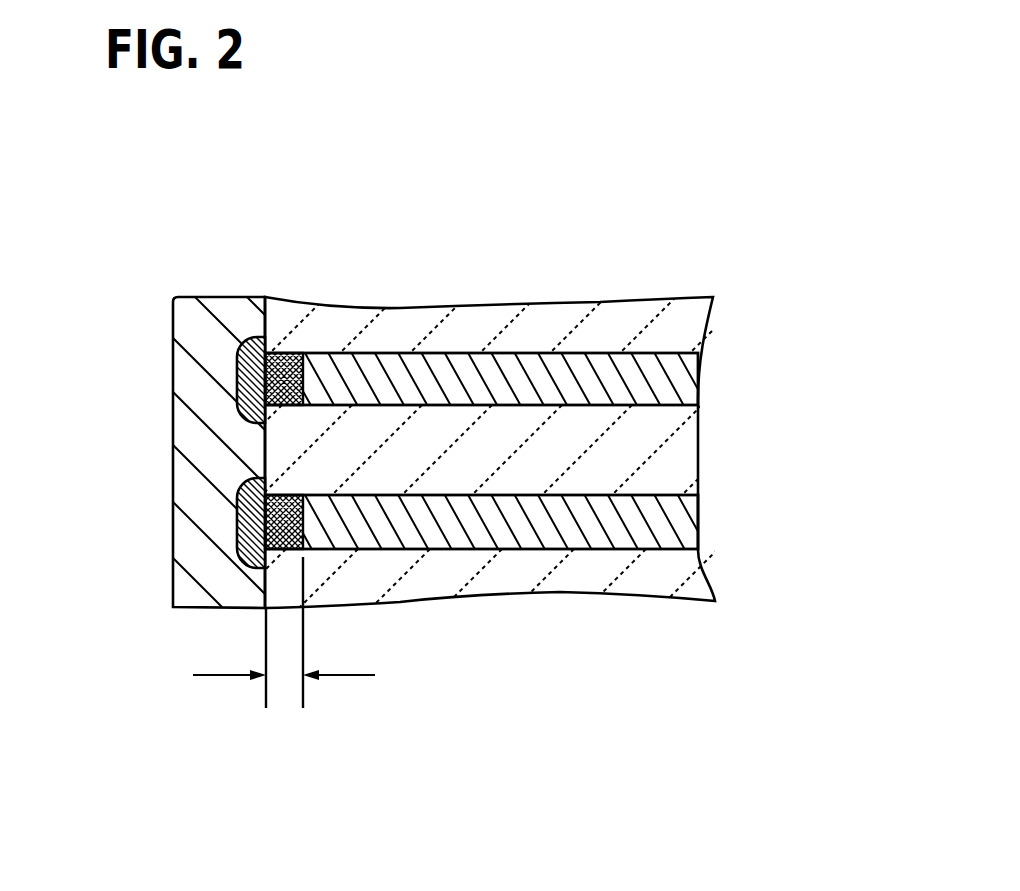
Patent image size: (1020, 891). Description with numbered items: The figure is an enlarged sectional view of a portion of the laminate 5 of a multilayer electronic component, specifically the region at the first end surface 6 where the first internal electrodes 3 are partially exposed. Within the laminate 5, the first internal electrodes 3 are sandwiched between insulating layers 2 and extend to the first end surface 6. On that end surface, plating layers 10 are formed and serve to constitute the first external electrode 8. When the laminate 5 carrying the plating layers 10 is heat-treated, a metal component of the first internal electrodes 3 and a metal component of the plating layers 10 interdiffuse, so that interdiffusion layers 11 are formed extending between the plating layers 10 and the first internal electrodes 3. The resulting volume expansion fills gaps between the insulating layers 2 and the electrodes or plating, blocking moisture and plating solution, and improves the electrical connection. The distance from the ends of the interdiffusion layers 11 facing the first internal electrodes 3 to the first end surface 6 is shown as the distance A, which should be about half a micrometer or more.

The insulating layers 2 is at (598, 485).
The first internal electrodes 3 is at (675, 373).
The laminate 5 is at (621, 286).
The first end surface 6 is at (185, 451).
The first external electrode 8 is at (278, 374).
The plating layers 10 is at (185, 371).
The interdiffusion layers 11 is at (283, 352).
The distance A is at (284, 673).